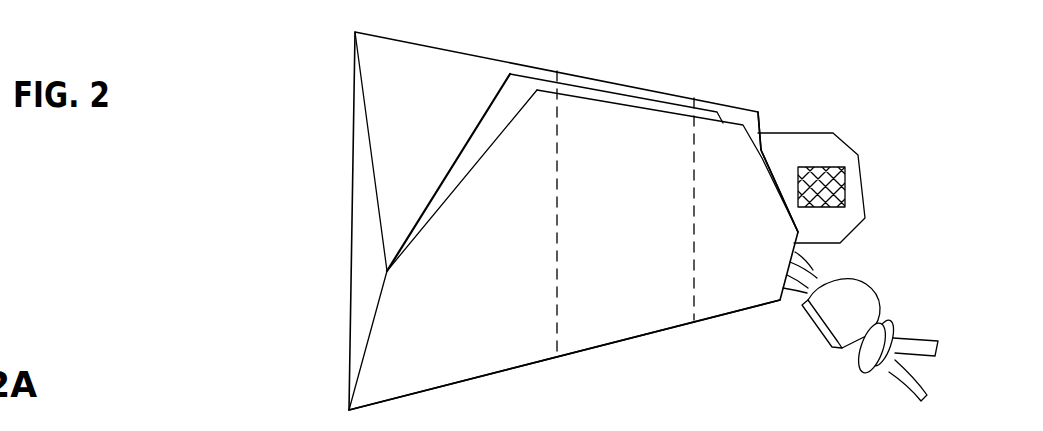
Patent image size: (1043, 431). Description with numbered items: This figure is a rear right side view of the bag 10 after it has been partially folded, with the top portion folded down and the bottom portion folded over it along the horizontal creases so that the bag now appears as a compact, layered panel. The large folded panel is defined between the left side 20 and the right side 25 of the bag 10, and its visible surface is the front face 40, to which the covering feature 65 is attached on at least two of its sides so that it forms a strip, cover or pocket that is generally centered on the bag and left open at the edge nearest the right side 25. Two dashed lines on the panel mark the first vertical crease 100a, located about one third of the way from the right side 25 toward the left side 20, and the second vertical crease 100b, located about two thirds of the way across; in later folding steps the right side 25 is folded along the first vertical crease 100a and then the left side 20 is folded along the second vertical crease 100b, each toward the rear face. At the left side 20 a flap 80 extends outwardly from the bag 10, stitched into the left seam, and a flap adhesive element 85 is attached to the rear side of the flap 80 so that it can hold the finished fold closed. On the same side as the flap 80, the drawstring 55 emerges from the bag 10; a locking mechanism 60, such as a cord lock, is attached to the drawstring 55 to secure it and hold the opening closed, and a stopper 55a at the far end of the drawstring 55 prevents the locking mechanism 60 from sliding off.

The bag 10 is at (525, 215).
The right side 25 is at (321, 221).
The left side 20 is at (788, 137).
The front face 40 is at (653, 315).
The covering feature 65 is at (564, 365).
The first vertical crease 100a is at (558, 195).
The second vertical crease 100b is at (695, 262).
The flap 80 is at (807, 148).
The flap adhesive element 85 is at (845, 172).
The drawstring 55 is at (815, 270).
The stopper 55a is at (878, 297).
The locking mechanism 60 is at (888, 337).